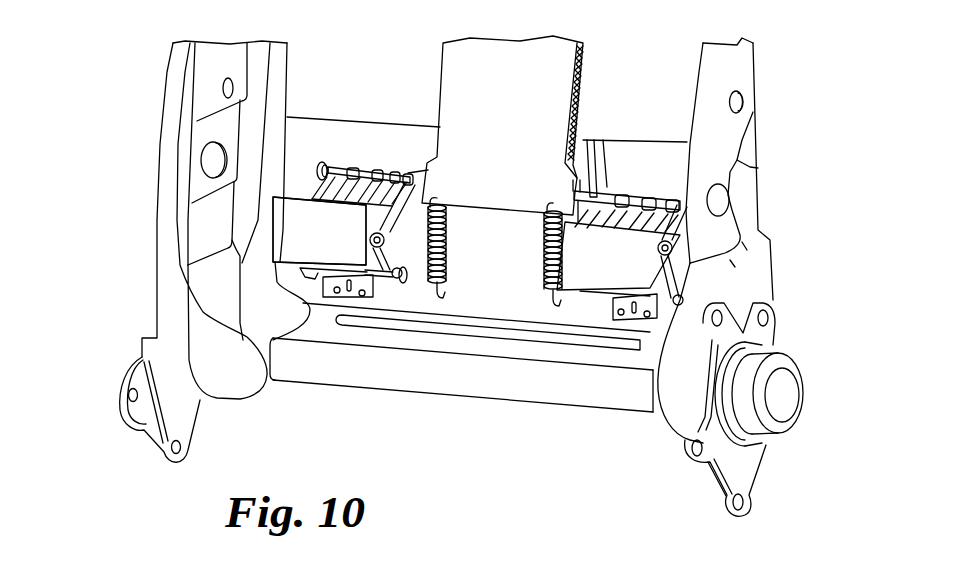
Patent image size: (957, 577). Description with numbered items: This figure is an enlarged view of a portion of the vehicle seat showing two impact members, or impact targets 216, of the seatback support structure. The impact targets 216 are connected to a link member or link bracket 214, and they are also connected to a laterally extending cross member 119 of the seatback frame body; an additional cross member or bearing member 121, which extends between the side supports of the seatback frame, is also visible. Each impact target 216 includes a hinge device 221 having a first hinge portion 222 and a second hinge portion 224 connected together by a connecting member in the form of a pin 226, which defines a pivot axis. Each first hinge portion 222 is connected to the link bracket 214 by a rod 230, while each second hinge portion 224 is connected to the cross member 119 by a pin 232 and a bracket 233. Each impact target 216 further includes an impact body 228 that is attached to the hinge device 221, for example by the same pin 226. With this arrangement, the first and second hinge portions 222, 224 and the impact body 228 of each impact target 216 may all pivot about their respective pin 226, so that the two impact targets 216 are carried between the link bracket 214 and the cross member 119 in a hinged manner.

The cross member 119 is at (617, 413).
The bearing member 121 is at (640, 147).
The link bracket 214 is at (585, 92).
The impact target 216 is at (328, 220).
The hinge device 221 is at (325, 160).
The first hinge portion 222 is at (387, 187).
The second hinge portion 224 is at (440, 298).
The pin 226 is at (448, 250).
The impact body 228 is at (340, 243).
The rod 230 is at (418, 170).
The pin 232 is at (412, 283).
The bracket 233 is at (367, 283).